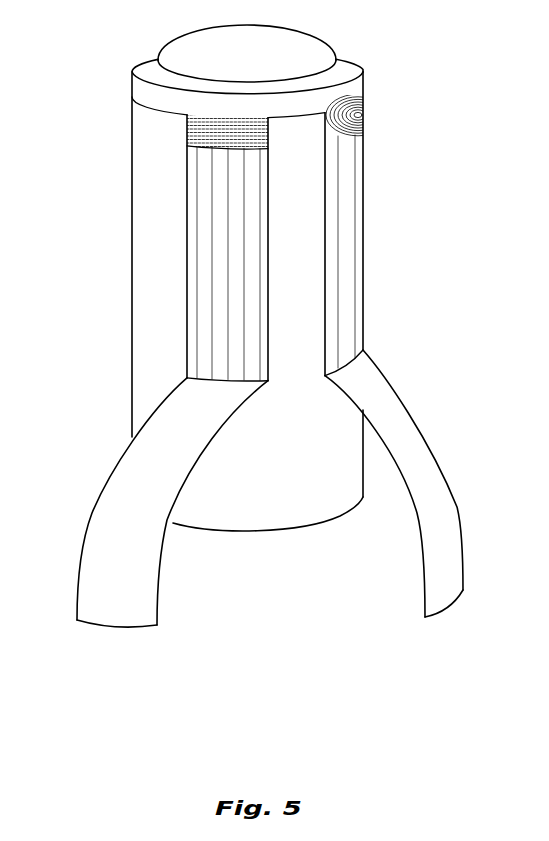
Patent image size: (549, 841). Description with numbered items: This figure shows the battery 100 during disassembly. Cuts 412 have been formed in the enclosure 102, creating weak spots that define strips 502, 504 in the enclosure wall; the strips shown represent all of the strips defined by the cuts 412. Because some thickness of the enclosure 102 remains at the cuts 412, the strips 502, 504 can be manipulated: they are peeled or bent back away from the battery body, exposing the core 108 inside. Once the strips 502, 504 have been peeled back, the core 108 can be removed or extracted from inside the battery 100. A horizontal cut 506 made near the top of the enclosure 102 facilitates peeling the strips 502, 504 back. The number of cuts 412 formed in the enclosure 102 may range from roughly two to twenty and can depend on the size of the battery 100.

The battery 100 is at (408, 53).
The enclosure 102 is at (132, 265).
The core 108 is at (345, 227).
The cuts 412 is at (186, 316).
The strip 502 is at (447, 437).
The strip 504 is at (110, 533).
The horizontal cut 506 is at (305, 116).